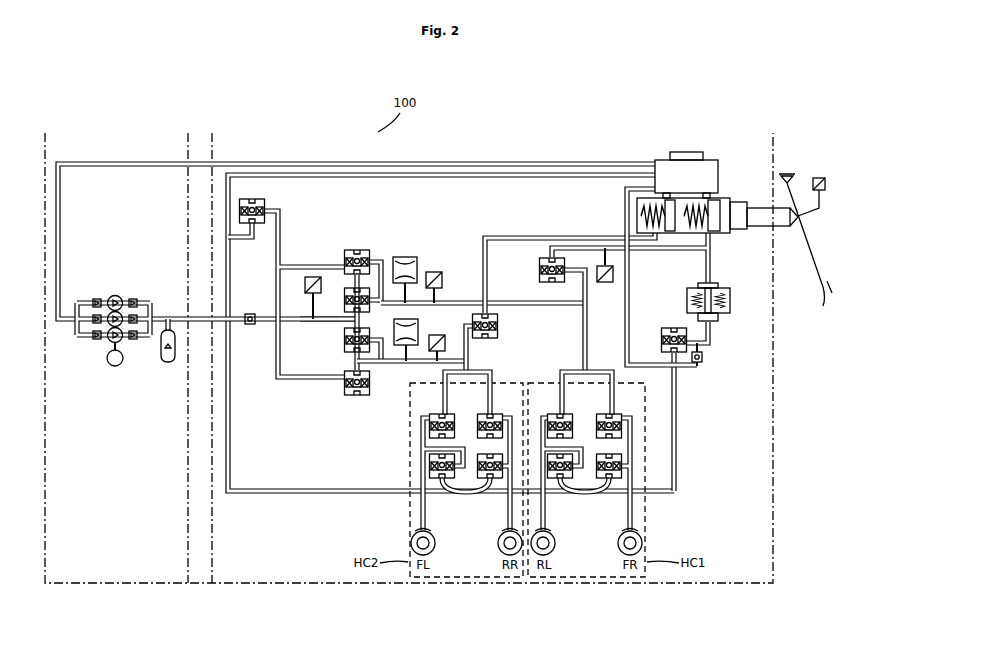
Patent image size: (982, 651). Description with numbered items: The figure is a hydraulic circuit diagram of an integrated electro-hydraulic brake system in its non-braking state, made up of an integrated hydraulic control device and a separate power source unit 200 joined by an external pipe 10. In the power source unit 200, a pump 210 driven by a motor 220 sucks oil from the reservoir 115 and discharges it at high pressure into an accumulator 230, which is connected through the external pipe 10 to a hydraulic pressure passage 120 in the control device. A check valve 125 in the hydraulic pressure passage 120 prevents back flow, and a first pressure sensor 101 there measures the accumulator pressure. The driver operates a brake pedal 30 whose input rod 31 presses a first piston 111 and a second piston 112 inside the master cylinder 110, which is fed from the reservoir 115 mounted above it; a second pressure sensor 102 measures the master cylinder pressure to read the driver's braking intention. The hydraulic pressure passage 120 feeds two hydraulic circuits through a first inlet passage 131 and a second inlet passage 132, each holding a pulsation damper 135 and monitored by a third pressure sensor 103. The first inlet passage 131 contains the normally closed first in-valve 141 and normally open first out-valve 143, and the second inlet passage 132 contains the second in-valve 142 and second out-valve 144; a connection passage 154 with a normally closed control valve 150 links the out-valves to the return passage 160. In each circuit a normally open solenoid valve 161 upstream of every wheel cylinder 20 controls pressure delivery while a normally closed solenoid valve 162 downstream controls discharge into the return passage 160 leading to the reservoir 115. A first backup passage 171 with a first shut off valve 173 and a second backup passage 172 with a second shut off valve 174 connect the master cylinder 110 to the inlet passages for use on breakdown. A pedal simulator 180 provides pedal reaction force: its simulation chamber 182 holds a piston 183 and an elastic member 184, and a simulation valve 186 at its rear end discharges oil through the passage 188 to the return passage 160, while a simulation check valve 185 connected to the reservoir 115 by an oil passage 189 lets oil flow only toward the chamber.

The external pipe 10 is at (205, 323).
The wheel cylinder 20 is at (497, 540).
The brake pedal 30 is at (821, 297).
The input rod 31 is at (780, 227).
The first pressure sensor 101 is at (313, 276).
The second pressure sensor 102 is at (605, 285).
The third pressure sensor 103 is at (438, 334).
The master cylinder 110 is at (722, 234).
The first piston 111 is at (721, 199).
The second piston 112 is at (675, 200).
The reservoir 115 is at (703, 151).
The hydraulic pressure passage 120 is at (327, 323).
The check valve 125 is at (251, 312).
The first inlet passage 131 is at (456, 303).
The second inlet passage 132 is at (413, 363).
The pulsation damper 135 is at (407, 319).
The first in-valve 141 is at (346, 290).
The second in-valve 142 is at (345, 345).
The first out-valve 143 is at (347, 250).
The second out-valve 144 is at (352, 397).
The control valve 150 is at (265, 202).
The connection passage 154 is at (275, 261).
The return passage 160 is at (340, 494).
The NO type solenoid valve 161 is at (430, 417).
The NC type solenoid valve 162 is at (470, 496).
The first backup passage 171 is at (703, 253).
The second backup passage 172 is at (500, 238).
The first shut off valve 173 is at (540, 271).
The second shut off valve 174 is at (498, 329).
The pedal simulator 180 is at (718, 322).
The simulation chamber 182 is at (731, 302).
The piston 183 is at (731, 291).
The elastic member 184 is at (719, 318).
The simulation check valve 185 is at (704, 360).
The simulation valve 186 is at (674, 327).
The passage 188 is at (677, 441).
The oil passage 189 is at (629, 280).
The power source unit 200 is at (112, 131).
The pump 210 is at (112, 296).
The motor 220 is at (112, 367).
The accumulator 230 is at (165, 362).